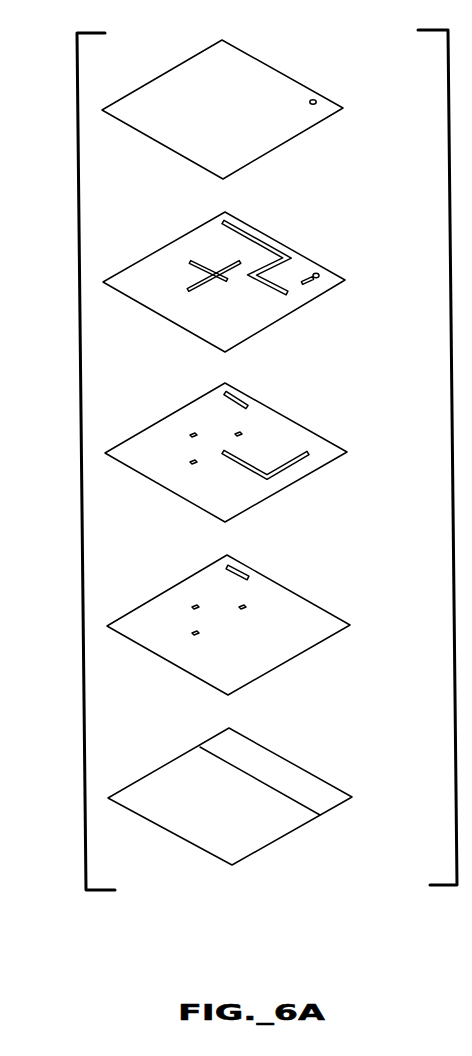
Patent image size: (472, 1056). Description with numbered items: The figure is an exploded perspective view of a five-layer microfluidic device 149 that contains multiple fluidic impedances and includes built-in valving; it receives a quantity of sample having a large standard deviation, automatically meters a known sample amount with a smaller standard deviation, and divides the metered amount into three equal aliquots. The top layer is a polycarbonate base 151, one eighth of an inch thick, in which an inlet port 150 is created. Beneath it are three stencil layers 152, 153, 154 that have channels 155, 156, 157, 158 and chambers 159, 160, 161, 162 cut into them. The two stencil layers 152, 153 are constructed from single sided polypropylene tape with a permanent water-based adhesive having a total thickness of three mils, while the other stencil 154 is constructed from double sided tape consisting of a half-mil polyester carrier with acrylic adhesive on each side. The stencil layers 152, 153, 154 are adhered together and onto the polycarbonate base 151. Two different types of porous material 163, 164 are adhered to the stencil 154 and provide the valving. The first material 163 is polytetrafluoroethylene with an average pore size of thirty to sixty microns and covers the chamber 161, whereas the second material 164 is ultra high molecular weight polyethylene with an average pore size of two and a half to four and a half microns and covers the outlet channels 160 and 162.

The microfluidic device 149 is at (72, 410).
The inlet port 150 is at (315, 99).
The polycarbonate base 151 is at (333, 117).
The stencil layer 152 is at (330, 290).
The stencil layer 153 is at (337, 462).
The stencil layer 154 is at (337, 633).
The channel 155 is at (318, 273).
The channel 156 is at (267, 243).
The channel 157 is at (219, 271).
The channel 158 is at (289, 458).
The chamber 159 is at (237, 397).
The outlet channel 160 is at (192, 432).
The chamber 161 is at (244, 572).
The outlet channel 162 is at (193, 604).
The first porous material 163 is at (337, 805).
The second porous material 164 is at (290, 833).